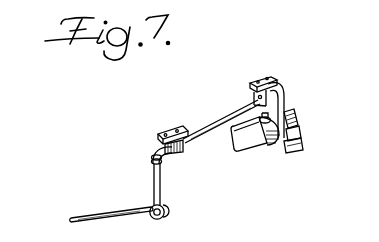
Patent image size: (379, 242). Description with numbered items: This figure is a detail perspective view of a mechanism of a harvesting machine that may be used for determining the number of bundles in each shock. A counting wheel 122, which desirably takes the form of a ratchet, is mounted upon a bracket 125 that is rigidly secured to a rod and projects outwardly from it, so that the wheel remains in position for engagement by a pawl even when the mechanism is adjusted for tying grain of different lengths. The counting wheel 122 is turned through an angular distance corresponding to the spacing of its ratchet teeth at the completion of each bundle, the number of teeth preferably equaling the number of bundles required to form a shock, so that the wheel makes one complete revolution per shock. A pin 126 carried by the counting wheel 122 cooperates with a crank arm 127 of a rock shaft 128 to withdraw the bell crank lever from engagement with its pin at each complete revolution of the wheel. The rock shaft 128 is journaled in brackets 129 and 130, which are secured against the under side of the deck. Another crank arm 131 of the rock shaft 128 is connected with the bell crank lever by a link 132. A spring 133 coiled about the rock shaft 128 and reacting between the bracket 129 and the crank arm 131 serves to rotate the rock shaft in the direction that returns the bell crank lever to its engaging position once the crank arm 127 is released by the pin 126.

The counting wheel 122 is at (298, 152).
The bracket 125 is at (234, 146).
The pin 126 is at (267, 153).
The crank arm 127 is at (288, 115).
The rock shaft 128 is at (232, 117).
The bracket 129 is at (173, 130).
The bracket 130 is at (276, 71).
The crank arm 131 is at (153, 192).
The link 132 is at (87, 218).
The spring 133 is at (166, 160).